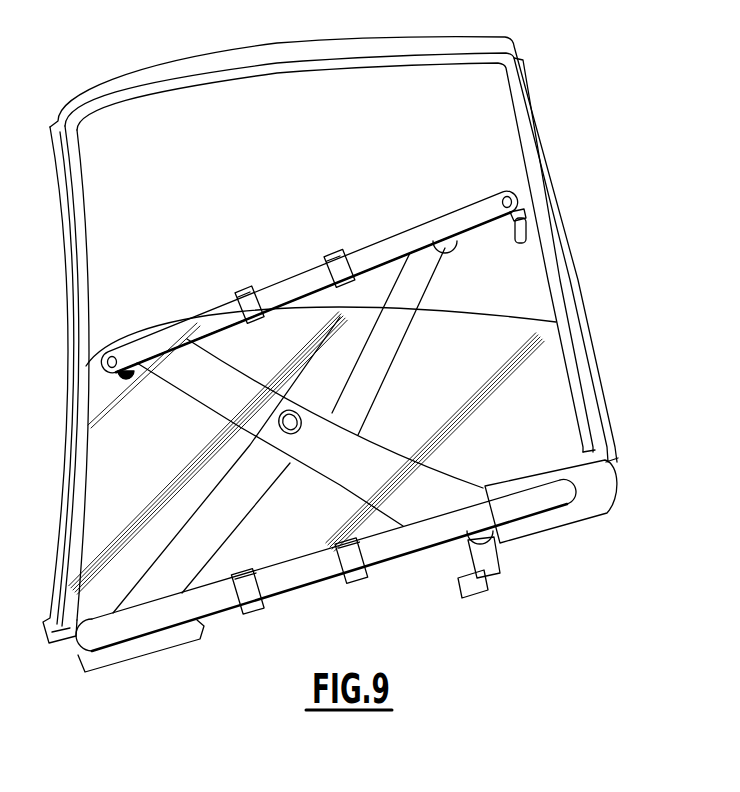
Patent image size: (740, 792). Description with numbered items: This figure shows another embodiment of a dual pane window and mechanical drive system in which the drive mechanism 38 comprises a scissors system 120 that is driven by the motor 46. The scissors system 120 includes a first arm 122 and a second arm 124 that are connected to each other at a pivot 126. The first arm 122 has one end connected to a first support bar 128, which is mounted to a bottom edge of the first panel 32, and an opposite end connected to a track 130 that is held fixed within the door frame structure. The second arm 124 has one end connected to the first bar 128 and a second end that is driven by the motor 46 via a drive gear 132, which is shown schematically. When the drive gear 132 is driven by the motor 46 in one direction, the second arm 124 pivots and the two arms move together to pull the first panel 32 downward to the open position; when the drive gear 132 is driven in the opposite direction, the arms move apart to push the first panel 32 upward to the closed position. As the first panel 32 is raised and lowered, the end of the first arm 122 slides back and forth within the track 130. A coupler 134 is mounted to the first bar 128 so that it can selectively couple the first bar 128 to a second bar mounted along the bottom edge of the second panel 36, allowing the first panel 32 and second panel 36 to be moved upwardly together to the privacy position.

The first panel 32 is at (490, 113).
The second panel 36 is at (545, 358).
The drive mechanism 38 is at (466, 280).
The motor 46 is at (588, 512).
The scissors system 120 is at (376, 421).
The first arm 122 is at (368, 216).
The second arm 124 is at (447, 494).
The pivot 126 is at (297, 434).
The first support bar 128 is at (441, 186).
The track 130 is at (107, 664).
The drive gear 132 is at (473, 588).
The coupler 134 is at (525, 233).